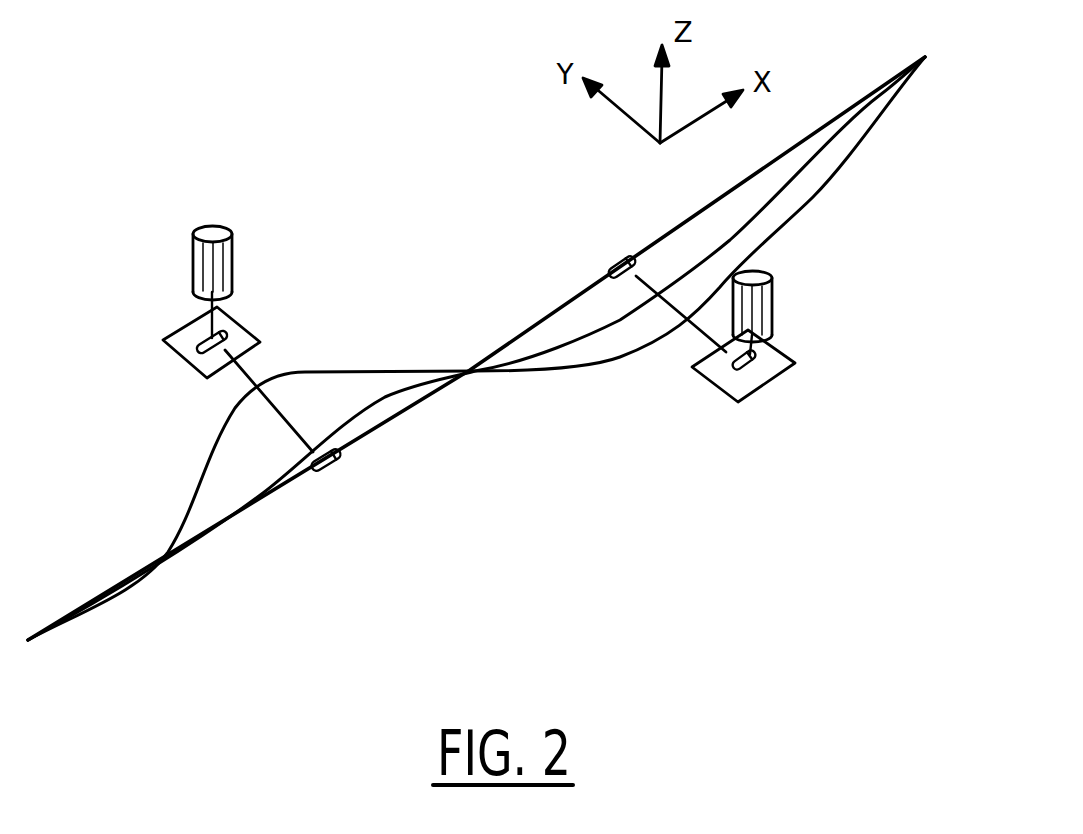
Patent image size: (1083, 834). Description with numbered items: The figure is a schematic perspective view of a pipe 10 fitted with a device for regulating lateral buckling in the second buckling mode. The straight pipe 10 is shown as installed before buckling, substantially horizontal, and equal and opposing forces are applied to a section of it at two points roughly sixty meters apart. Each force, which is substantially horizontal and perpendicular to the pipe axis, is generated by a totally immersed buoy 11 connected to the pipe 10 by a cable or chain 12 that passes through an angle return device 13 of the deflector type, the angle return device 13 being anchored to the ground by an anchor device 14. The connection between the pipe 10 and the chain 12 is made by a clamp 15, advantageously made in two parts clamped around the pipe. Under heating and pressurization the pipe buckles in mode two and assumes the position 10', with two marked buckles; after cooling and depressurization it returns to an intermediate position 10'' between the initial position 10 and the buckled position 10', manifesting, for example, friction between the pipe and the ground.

The pipe 10 is at (476, 348).
The buckling position of the pipe 10' is at (476, 348).
The intermediate position of the pipe 10'' is at (476, 348).
The buoy 11 is at (193, 252).
The cable or chain 12 is at (255, 384).
The angle return device 13 is at (228, 338).
The anchor device 14 is at (162, 352).
The clamp 15 is at (333, 470).